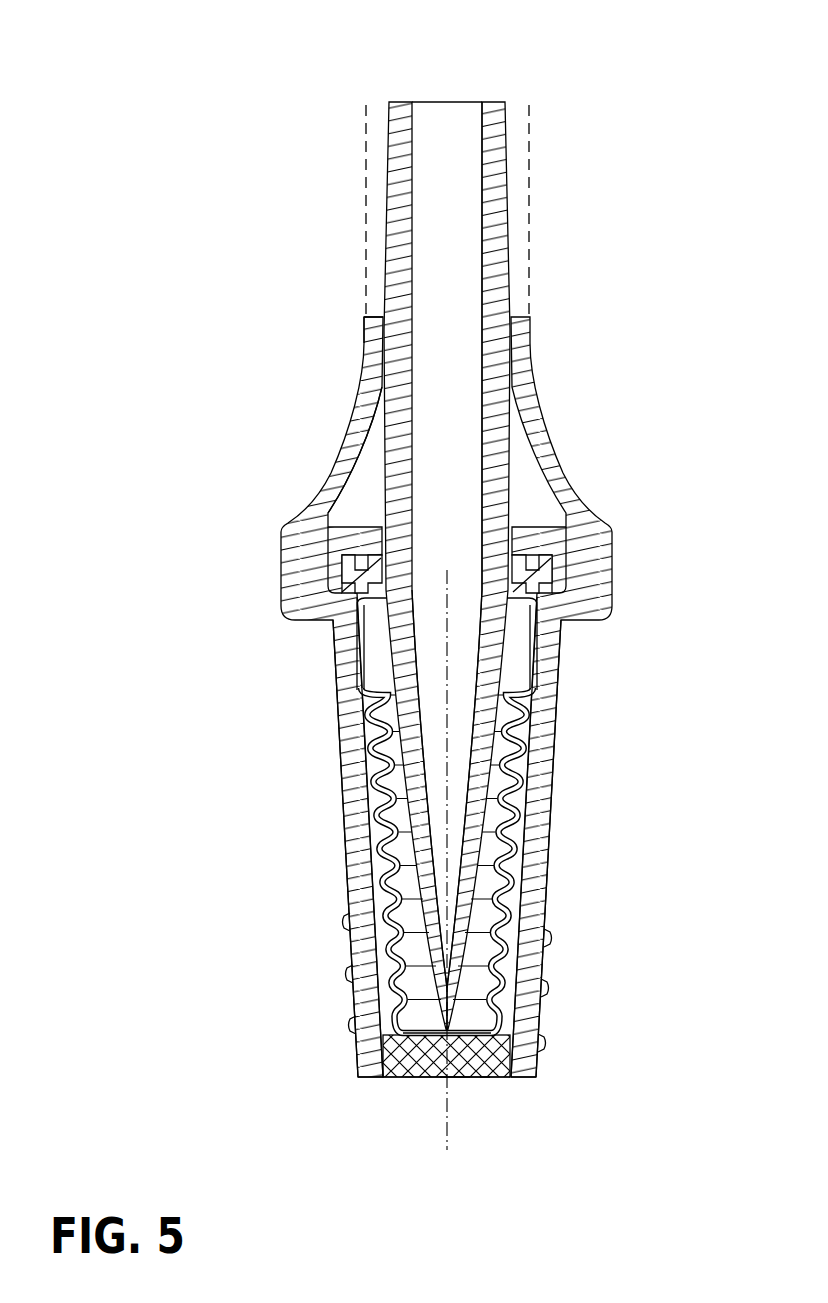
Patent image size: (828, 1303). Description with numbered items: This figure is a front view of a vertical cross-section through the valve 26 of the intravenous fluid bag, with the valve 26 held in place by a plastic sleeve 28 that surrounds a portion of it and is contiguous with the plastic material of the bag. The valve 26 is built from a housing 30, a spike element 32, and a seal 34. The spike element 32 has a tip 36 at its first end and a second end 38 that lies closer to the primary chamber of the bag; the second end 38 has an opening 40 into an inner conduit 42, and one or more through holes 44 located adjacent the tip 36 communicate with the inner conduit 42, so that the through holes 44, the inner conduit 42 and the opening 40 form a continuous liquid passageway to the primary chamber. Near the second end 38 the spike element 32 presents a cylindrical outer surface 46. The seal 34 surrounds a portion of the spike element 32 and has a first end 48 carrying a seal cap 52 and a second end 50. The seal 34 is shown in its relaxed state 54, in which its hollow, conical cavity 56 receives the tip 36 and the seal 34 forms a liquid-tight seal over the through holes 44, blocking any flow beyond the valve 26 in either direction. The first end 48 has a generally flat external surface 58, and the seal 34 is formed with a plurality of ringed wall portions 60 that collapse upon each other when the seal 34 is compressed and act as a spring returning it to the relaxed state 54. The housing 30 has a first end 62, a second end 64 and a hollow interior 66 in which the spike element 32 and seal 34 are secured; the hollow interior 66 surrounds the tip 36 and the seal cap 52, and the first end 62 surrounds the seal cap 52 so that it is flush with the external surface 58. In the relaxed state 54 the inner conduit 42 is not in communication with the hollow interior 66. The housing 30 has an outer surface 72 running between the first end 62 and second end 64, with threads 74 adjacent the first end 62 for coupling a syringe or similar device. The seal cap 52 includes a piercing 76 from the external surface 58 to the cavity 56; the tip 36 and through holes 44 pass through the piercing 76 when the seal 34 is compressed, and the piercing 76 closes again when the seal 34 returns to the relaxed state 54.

The valve 26 is at (286, 525).
The plastic sleeve 28 is at (530, 259).
The housing 30 is at (616, 526).
The spike element 32 is at (380, 279).
The seal 34 is at (518, 1085).
The tip 36 is at (402, 1022).
The second end 38 is at (396, 102).
The opening 40 is at (435, 95).
The inner conduit 42 is at (478, 140).
The through holes 44 is at (463, 925).
The outer surface 46 is at (505, 217).
The first end 48 is at (390, 1079).
The second end 50 is at (545, 582).
The seal cap 52 is at (460, 1062).
The relaxed state 54 is at (422, 1096).
The cavity 56 is at (380, 667).
The external surface 58 is at (488, 1080).
The ringed wall portions 60 is at (367, 783).
The first end 62 is at (372, 1079).
The second end 64 is at (377, 317).
The hollow interior 66 is at (358, 490).
The outer surface 72 is at (353, 880).
The threads 74 is at (348, 969).
The piercing 76 is at (462, 1079).